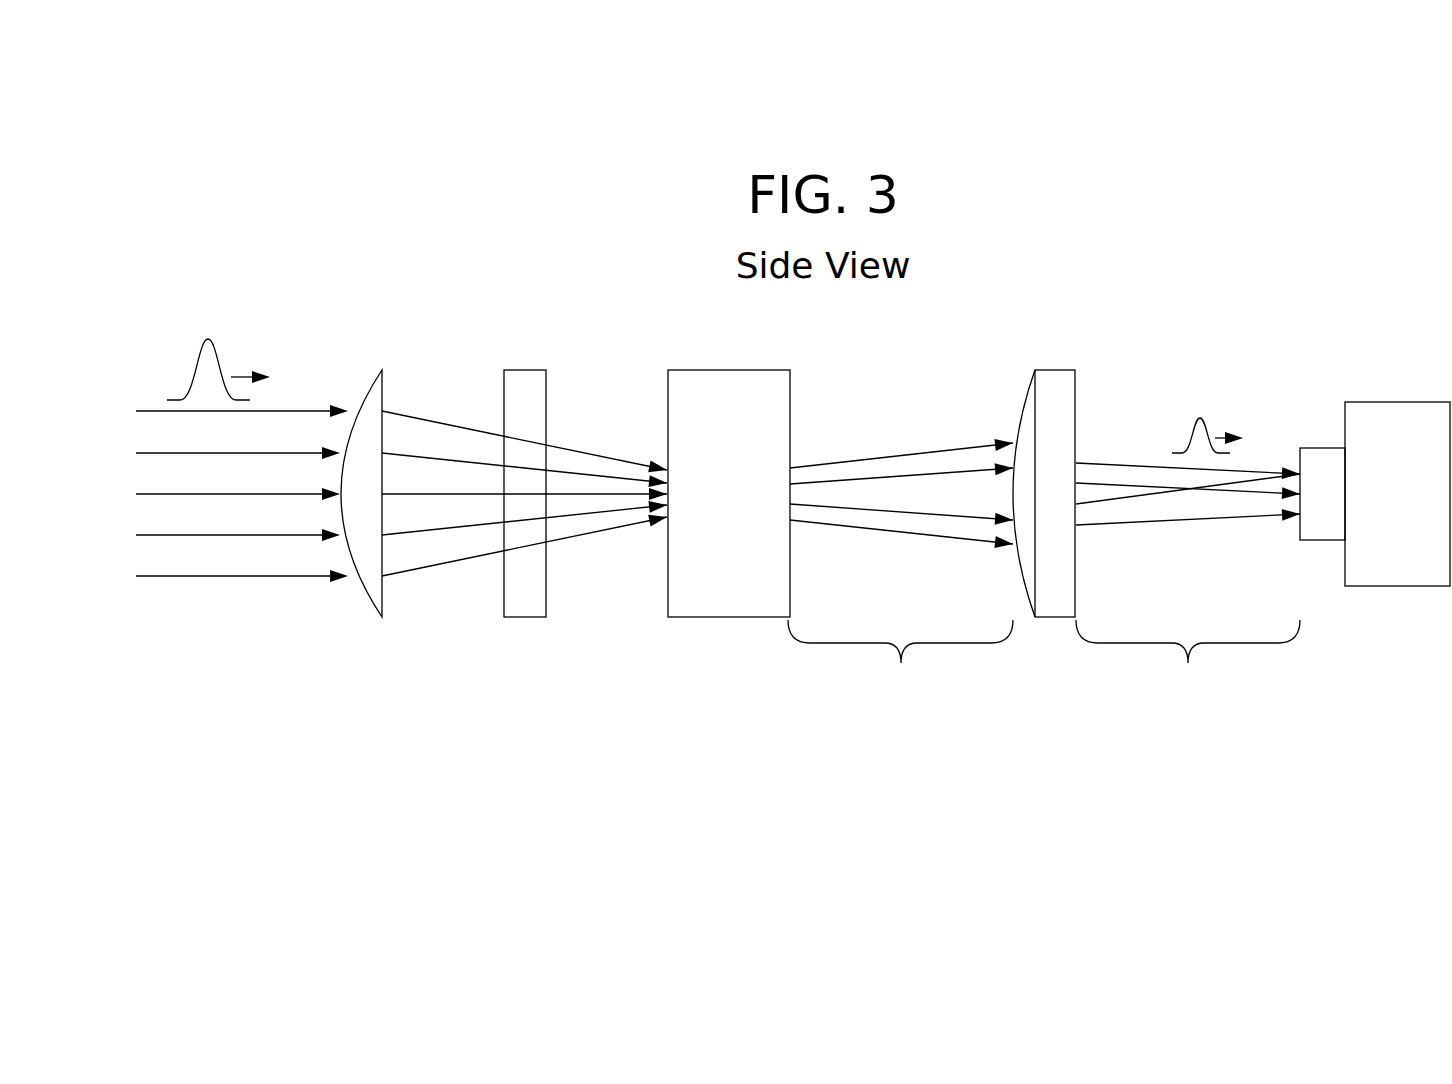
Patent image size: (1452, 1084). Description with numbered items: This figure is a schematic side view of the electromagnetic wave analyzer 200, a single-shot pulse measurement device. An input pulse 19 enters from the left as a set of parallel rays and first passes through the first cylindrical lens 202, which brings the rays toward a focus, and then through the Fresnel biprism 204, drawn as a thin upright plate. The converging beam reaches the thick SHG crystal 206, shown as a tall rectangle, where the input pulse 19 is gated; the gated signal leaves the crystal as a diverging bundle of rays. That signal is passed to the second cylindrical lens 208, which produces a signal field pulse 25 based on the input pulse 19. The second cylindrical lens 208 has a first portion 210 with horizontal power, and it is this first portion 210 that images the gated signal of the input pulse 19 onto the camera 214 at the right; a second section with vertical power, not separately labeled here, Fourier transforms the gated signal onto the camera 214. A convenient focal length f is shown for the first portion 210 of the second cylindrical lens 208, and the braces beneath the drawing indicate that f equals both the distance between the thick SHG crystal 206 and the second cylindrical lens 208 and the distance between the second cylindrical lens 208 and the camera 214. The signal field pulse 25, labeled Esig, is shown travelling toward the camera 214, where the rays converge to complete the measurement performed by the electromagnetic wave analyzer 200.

The electromagnetic wave analyzer 200 is at (375, 812).
The input pulse 19 is at (183, 350).
The first cylindrical lens 202 is at (367, 400).
The Fresnel biprism 204 is at (526, 398).
The thick SHG crystal 206 is at (750, 398).
The second cylindrical lens 208 is at (1062, 398).
The first portion of the second cylindrical lens 210 is at (1027, 410).
The signal field pulse 25 is at (1190, 425).
The camera 214 is at (1422, 508).